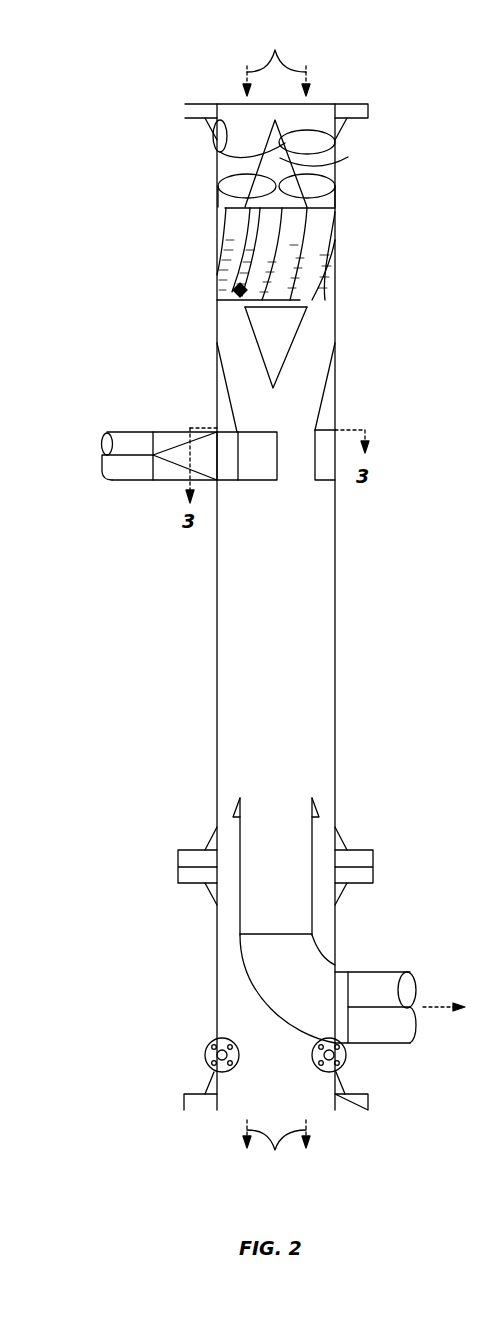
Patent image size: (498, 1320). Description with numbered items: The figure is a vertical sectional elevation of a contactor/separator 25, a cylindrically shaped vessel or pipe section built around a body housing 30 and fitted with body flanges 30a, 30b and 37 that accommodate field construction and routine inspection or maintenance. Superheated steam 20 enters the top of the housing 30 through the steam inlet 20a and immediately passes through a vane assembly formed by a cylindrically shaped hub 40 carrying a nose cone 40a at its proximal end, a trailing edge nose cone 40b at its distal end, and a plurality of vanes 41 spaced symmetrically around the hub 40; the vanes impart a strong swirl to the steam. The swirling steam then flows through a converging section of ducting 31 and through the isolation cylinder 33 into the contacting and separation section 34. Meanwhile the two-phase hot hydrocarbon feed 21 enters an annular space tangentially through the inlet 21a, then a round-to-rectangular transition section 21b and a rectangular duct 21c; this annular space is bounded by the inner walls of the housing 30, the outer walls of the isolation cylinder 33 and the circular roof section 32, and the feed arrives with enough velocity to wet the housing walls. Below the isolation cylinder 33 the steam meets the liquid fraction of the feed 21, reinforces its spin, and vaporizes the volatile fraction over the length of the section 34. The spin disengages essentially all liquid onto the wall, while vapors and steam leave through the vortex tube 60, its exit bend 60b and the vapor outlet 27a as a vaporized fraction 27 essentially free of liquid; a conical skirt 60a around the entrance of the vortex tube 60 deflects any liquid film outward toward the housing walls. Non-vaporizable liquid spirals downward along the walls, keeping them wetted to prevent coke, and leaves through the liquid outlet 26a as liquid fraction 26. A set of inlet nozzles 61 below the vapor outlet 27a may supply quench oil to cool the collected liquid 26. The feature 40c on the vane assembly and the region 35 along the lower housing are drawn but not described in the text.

The contactor/separator 25 is at (120, 52).
The steam 20 is at (276, 60).
The steam inlet 20a is at (222, 152).
The body housing 30 is at (335, 366).
The body flange 30a is at (350, 104).
The body flange 30b is at (352, 1110).
The hub 40 is at (288, 226).
The nose cone 40a is at (331, 149).
The trailing edge nose cone 40b is at (287, 333).
The swirl element hub 40c is at (228, 298).
The vanes 41 is at (310, 231).
The converging section of ducting 31 is at (323, 398).
The circular roof section 32 is at (318, 428).
The isolation cylinder 33 is at (323, 480).
The two-phase hot feed 21 is at (82, 457).
The tangentially affixed inlet 21a is at (119, 432).
The round-to-rectangular transition section 21b is at (170, 432).
The rectangular duct 21c is at (226, 478).
The contacting and separation section 34 is at (336, 482).
The collection section 35 is at (175, 803).
The vortex tube 60 is at (318, 827).
The conical skirt 60a is at (236, 808).
The exit bend 60b is at (243, 973).
The body flange 37 is at (360, 850).
The vapor outlet 27a is at (390, 970).
The vaporized fraction 27 is at (437, 1012).
The liquid outlet 26a is at (224, 1092).
The inlet nozzles 61 is at (348, 1055).
The liquid fraction 26 is at (276, 1152).